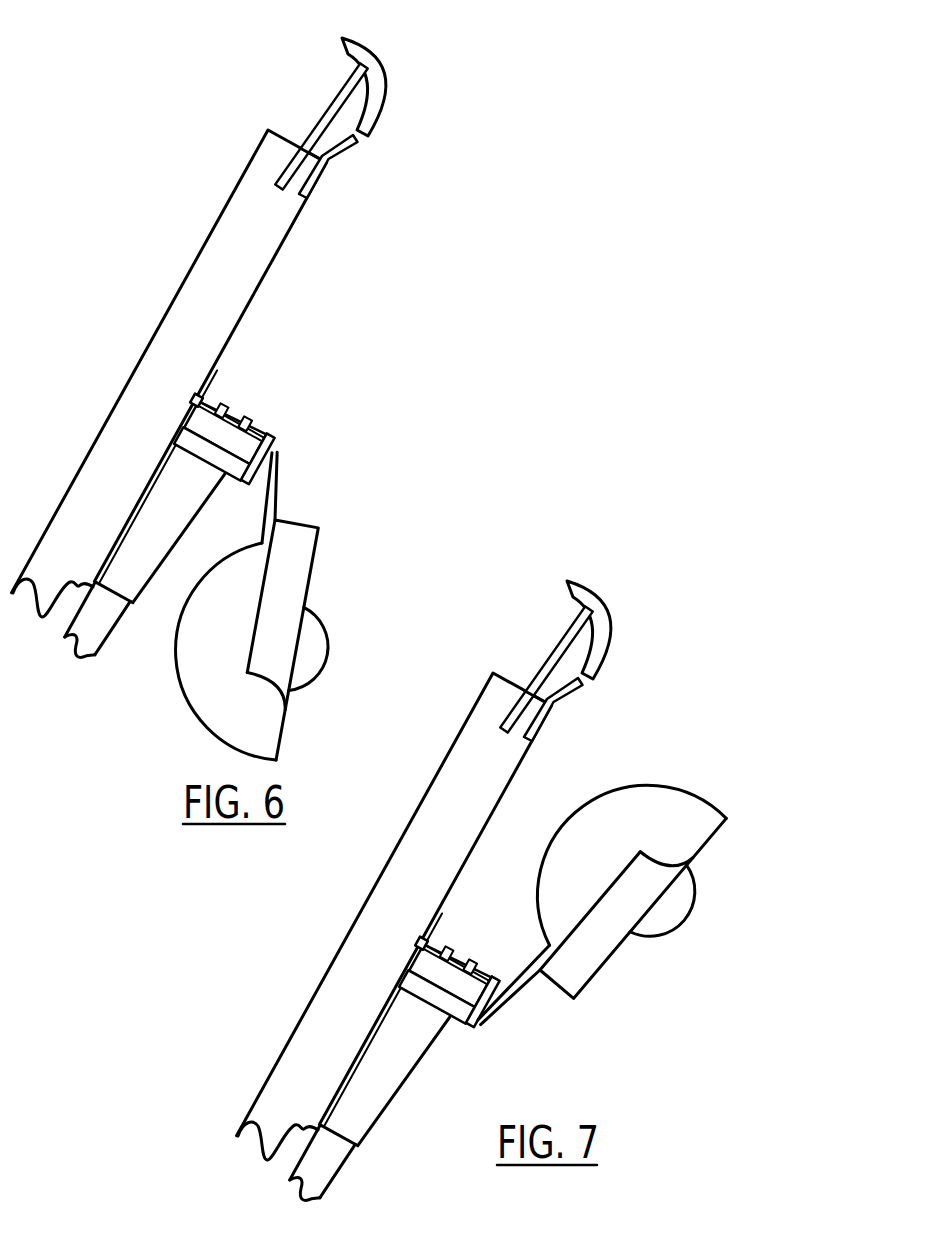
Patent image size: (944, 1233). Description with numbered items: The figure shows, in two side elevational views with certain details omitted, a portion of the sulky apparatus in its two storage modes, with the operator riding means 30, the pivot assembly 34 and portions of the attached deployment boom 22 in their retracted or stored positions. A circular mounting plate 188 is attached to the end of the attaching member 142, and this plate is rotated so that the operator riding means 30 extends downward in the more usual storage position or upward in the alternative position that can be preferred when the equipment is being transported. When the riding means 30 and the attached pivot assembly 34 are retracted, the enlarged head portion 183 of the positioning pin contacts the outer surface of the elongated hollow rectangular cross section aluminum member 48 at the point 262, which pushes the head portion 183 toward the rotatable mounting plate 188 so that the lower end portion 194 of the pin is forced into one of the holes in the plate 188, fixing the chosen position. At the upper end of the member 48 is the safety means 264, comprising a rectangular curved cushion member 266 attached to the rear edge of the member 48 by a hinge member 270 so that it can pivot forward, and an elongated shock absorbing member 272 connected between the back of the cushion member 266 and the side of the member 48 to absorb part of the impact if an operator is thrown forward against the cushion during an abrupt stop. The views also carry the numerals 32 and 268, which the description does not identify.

In FIG. 6, the deployment boom 22 is at (107, 620).
In FIG. 7, the deployment boom 22 is at (336, 1150).
In FIG. 6, the operator riding means 30 is at (226, 742).
In FIG. 7, the operator riding means 30 is at (667, 781).
In FIG. 6, the intermediate tube 32 is at (190, 457).
In FIG. 7, the intermediate tube 32 is at (433, 1040).
In FIG. 6, the pivot assembly 34 is at (277, 398).
In FIG. 7, the pivot assembly 34 is at (410, 989).
In FIG. 6, the elongated hollow rectangular cross section aluminum member 48 is at (222, 318).
In FIG. 7, the elongated hollow rectangular cross section aluminum member 48 is at (313, 1084).
In FIG. 6, the attaching member 142 is at (267, 510).
In FIG. 7, the attaching member 142 is at (516, 980).
In FIG. 6, the head portion 183 is at (212, 395).
In FIG. 7, the head portion 183 is at (413, 968).
In FIG. 6, the mounting plate 188 is at (280, 437).
In FIG. 7, the mounting plate 188 is at (476, 1027).
In FIG. 6, the lower end portion 194 is at (281, 412).
In FIG. 7, the lower end portion 194 is at (459, 961).
In FIG. 6, the point 262 is at (215, 363).
In FIG. 7, the point 262 is at (432, 913).
In FIG. 6, the safety means 264 is at (363, 104).
In FIG. 7, the safety means 264 is at (610, 653).
In FIG. 6, the curved cushion member 266 is at (368, 59).
In FIG. 7, the curved cushion member 266 is at (600, 607).
In FIG. 6, the first rod 268 is at (331, 110).
In FIG. 7, the first rod 268 is at (551, 678).
In FIG. 6, the hinge member 270 is at (324, 124).
In FIG. 7, the hinge member 270 is at (553, 682).
In FIG. 6, the elongated shock absorbing member 272 is at (311, 128).
In FIG. 7, the elongated shock absorbing member 272 is at (551, 634).